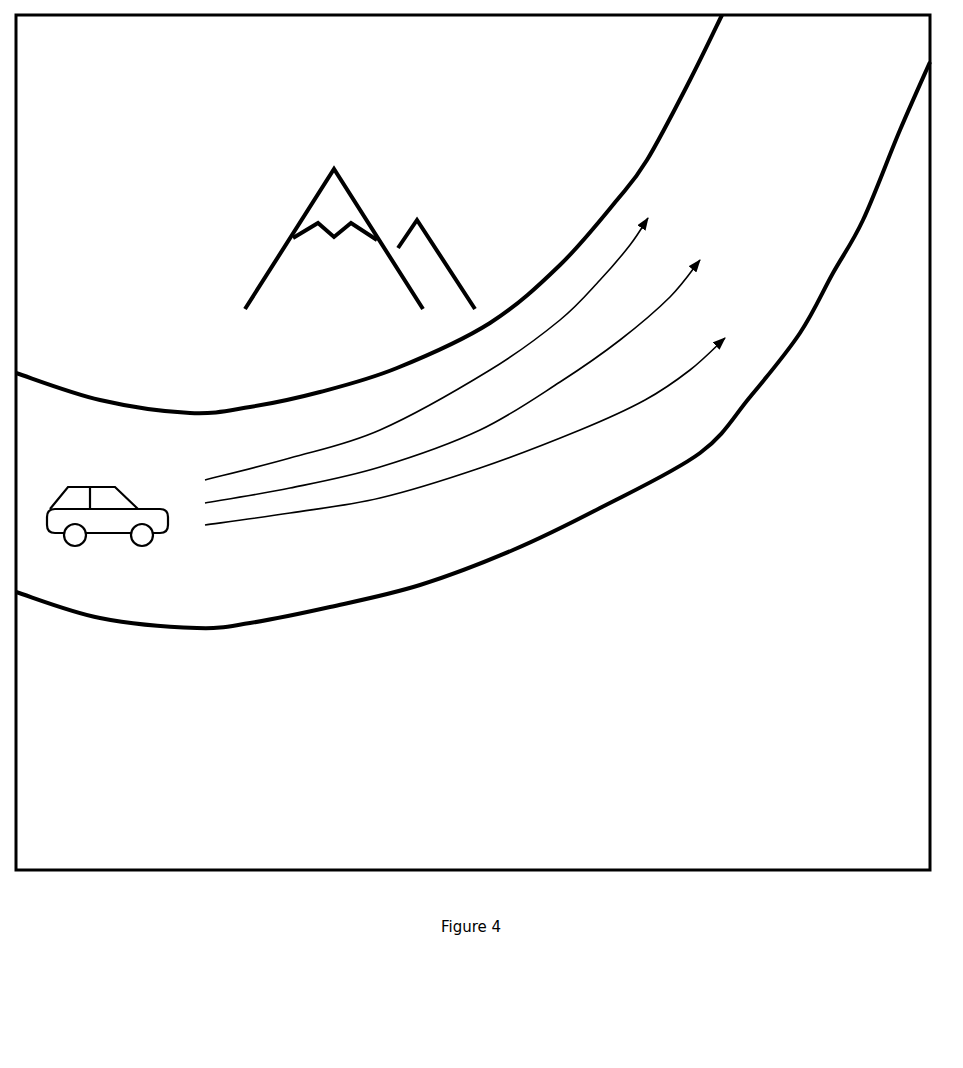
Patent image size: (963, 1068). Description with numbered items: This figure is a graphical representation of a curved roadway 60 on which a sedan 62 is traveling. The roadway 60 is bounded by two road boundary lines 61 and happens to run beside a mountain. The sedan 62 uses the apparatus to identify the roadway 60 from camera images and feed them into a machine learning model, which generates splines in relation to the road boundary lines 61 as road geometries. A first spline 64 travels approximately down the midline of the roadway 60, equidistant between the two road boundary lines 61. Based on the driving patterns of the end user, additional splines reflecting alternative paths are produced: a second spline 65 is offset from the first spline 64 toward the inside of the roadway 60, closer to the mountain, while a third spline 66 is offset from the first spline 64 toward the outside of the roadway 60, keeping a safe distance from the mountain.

The curved roadway 60 is at (473, 321).
The road boundary lines 61 is at (403, 359).
The sedan 62 is at (107, 529).
The first spline 64 is at (452, 381).
The second spline 65 is at (426, 349).
The third spline 66 is at (465, 431).